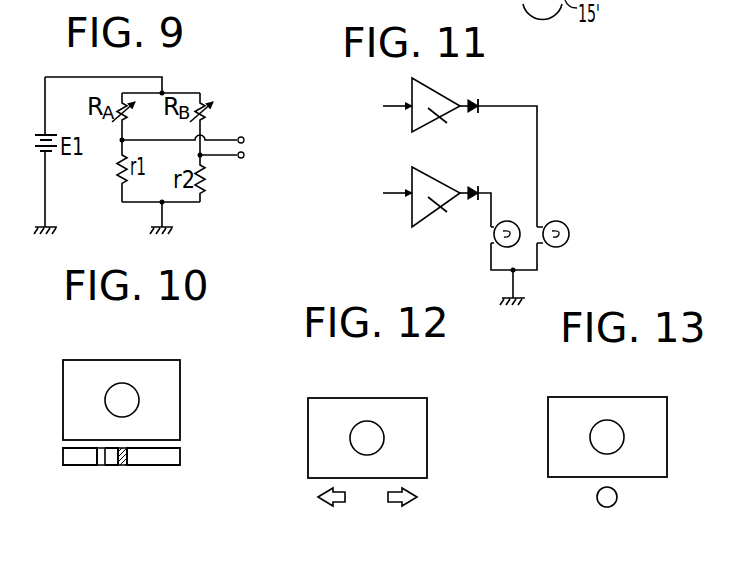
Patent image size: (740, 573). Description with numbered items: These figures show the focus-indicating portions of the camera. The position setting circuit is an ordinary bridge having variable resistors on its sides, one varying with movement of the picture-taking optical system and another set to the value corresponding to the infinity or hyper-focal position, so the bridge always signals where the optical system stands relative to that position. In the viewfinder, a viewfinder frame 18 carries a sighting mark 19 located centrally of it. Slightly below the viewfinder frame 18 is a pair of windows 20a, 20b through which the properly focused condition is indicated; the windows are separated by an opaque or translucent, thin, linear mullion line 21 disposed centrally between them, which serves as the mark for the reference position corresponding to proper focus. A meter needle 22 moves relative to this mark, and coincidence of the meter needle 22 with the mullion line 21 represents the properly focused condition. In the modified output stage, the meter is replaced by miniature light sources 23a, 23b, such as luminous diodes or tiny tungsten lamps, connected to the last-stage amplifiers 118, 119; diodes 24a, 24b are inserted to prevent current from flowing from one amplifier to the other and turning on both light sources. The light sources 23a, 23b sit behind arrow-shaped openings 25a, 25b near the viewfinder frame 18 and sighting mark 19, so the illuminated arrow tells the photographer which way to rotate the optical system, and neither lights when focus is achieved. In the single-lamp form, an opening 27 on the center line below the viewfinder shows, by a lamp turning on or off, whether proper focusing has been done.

In FIG. 10, the viewfinder frame 18 is at (135, 370).
In FIG. 12, the viewfinder frame 18 is at (385, 405).
In FIG. 13, the viewfinder frame 18 is at (615, 408).
In FIG. 10, the sighting mark 19 is at (125, 394).
In FIG. 12, the sighting mark 19 is at (372, 432).
In FIG. 13, the sighting mark 19 is at (612, 430).
In FIG. 10, the window 20a is at (72, 460).
In FIG. 10, the window 20b is at (163, 460).
In FIG. 10, the mullion line 21 is at (123, 462).
In FIG. 10, the meter needle 22 is at (102, 462).
In FIG. 11, the amplifier 118 is at (447, 123).
In FIG. 11, the amplifier 119 is at (447, 212).
In FIG. 11, the diode 24a is at (473, 187).
In FIG. 11, the diode 24b is at (478, 100).
In FIG. 11, the miniature light source 23a is at (500, 246).
In FIG. 11, the miniature light source 23b is at (562, 246).
In FIG. 12, the opening 25a is at (337, 506).
In FIG. 12, the opening 25b is at (412, 506).
In FIG. 13, the opening 27 is at (617, 498).